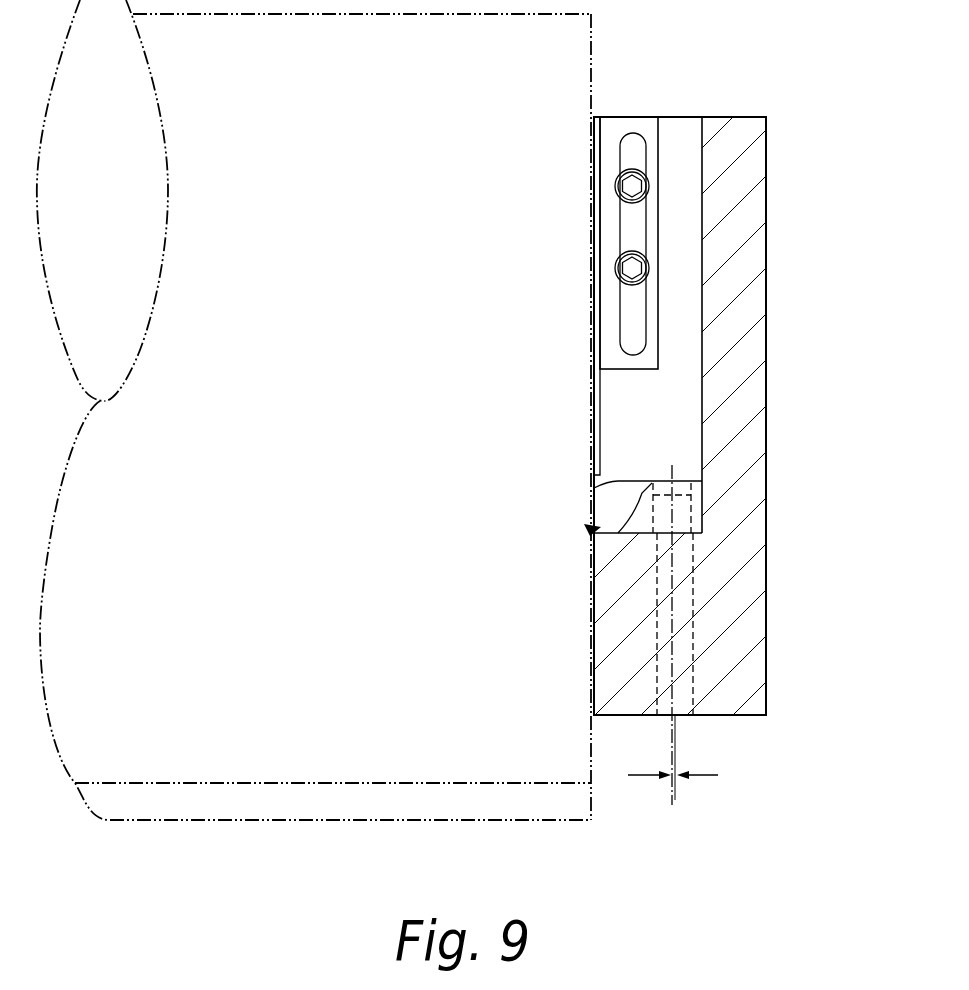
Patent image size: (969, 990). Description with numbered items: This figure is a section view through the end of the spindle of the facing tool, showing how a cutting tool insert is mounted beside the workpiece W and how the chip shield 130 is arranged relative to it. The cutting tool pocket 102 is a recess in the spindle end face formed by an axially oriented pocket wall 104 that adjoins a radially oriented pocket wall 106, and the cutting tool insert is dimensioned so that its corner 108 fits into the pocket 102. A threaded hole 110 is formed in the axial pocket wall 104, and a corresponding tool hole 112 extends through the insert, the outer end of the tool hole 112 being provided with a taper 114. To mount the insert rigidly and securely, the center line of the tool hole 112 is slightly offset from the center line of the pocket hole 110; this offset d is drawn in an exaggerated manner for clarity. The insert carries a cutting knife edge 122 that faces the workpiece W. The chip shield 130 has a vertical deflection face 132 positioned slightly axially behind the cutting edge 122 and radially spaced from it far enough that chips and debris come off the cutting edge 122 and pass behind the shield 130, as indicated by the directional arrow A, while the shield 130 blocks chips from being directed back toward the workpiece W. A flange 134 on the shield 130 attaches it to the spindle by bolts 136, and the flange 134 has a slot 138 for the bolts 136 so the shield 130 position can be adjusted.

The workpiece W is at (297, 461).
The cutting tool pocket 102 is at (680, 395).
The axial pocket wall 104 is at (640, 545).
The radial pocket wall 106 is at (703, 418).
The corner 108 is at (705, 542).
The threaded hole 110 is at (700, 605).
The tool hole 112 is at (697, 500).
The taper 114 is at (660, 479).
The cutting knife edge 122 is at (594, 497).
The directional arrow A is at (590, 530).
The chip shield 130 is at (610, 427).
The vertical deflection face 132 is at (600, 465).
The flange 134 is at (637, 117).
The bolts 136 is at (636, 268).
The slot 138 is at (632, 323).
The offset d is at (685, 783).